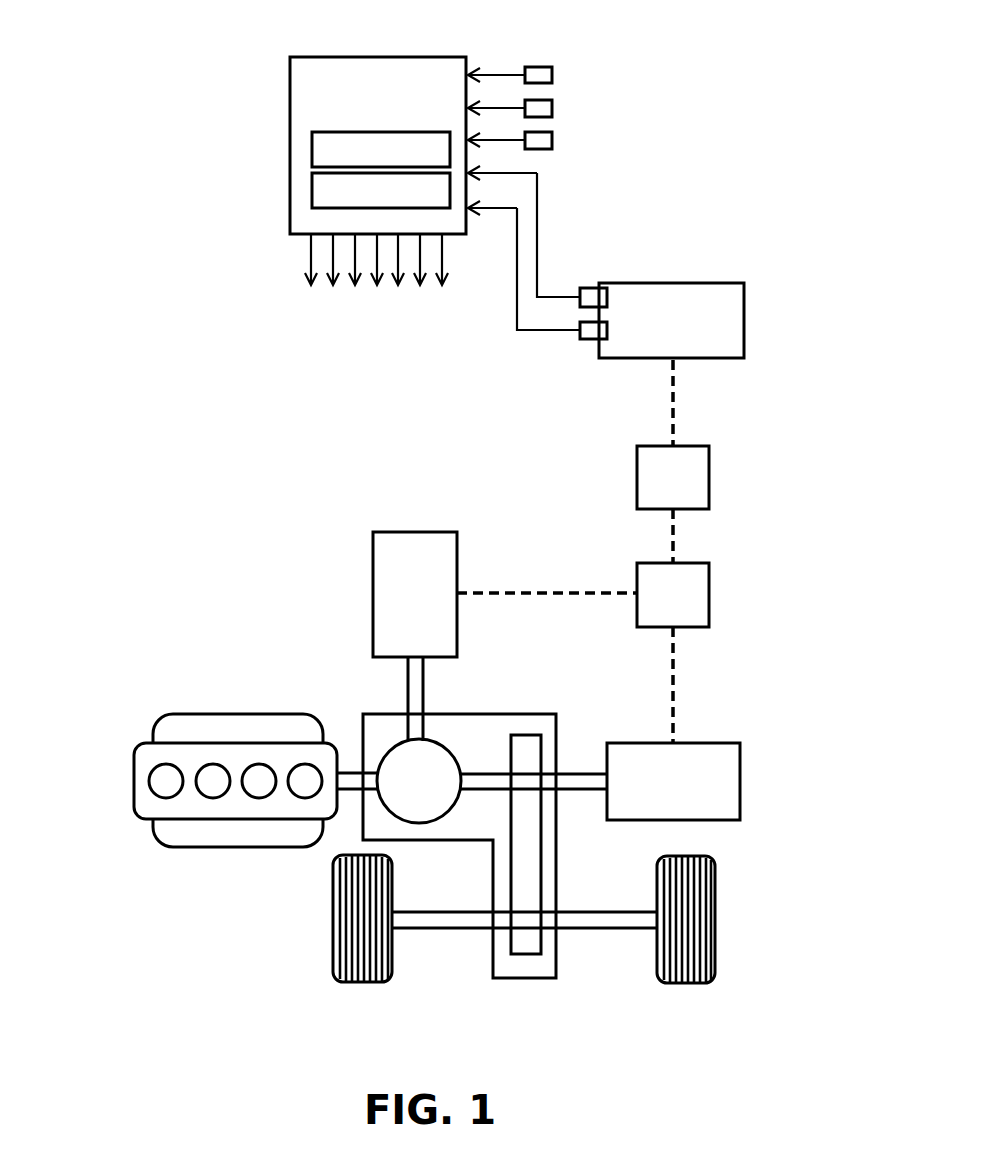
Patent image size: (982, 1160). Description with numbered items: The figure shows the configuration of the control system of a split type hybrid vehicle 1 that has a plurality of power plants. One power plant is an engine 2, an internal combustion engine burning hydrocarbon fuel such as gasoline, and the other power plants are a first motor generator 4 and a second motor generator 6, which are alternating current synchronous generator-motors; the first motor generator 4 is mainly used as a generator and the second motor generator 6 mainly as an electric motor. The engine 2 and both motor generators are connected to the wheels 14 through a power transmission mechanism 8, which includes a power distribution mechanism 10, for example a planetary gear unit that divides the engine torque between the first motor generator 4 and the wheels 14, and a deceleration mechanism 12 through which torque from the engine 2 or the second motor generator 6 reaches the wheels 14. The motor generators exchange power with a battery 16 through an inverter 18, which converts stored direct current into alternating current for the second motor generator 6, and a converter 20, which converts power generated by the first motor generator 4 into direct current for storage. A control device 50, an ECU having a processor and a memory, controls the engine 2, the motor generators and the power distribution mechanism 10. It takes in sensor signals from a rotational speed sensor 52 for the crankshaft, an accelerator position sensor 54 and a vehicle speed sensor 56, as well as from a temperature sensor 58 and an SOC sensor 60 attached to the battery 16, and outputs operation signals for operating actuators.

The vehicle 1 is at (172, 380).
The engine 2 is at (134, 767).
The first motor generator 4 is at (420, 532).
The second motor generator 6 is at (705, 743).
The power transmission mechanism 8 is at (540, 714).
The power distribution mechanism 10 is at (440, 740).
The deceleration mechanism 12 is at (520, 735).
The wheels 14 is at (333, 905).
The battery 16 is at (690, 283).
The inverter 18 is at (693, 563).
The converter 20 is at (693, 446).
The control device 50 is at (366, 57).
The rotational speed sensor 52 is at (552, 75).
The accelerator position sensor 54 is at (552, 108).
The vehicle speed sensor 56 is at (552, 140).
The temperature sensor 58 is at (590, 339).
The SOC sensor 60 is at (592, 288).